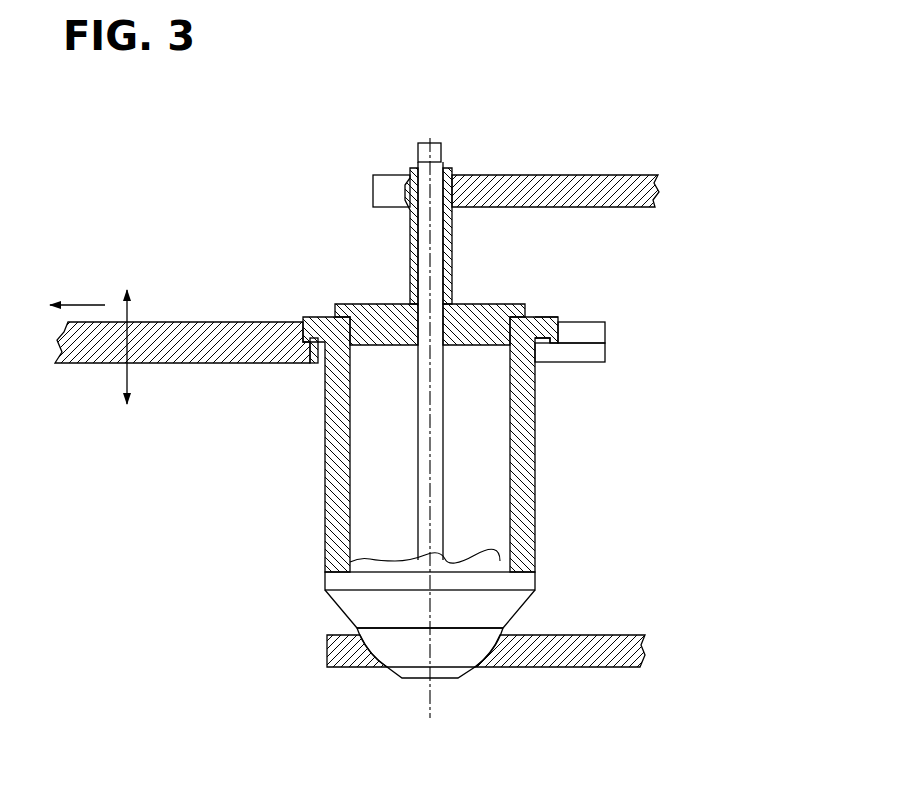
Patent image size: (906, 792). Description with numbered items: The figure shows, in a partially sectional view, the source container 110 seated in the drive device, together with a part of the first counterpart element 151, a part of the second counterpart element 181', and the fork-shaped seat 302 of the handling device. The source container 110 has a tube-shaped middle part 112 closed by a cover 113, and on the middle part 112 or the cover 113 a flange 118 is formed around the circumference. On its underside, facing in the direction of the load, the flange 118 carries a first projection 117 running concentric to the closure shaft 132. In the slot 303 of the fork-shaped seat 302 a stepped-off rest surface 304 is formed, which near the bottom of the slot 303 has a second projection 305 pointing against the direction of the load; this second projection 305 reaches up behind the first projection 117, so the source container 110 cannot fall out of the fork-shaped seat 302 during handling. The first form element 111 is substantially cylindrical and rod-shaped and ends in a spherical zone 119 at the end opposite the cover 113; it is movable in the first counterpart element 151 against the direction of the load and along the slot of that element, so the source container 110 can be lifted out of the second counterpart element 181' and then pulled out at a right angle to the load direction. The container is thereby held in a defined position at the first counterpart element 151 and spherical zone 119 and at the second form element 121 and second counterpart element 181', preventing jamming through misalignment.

The source container 110 is at (560, 534).
The first form element 111 is at (409, 257).
The tube-shaped middle part 112 is at (520, 415).
The cover 113 is at (368, 303).
The first projection 117 is at (558, 337).
The flange 118 is at (553, 317).
The spherical zone 119 is at (405, 185).
The second form element 121 is at (458, 645).
The closure shaft 132 is at (430, 442).
The first counterpart element 151 is at (622, 187).
The second counterpart element 181' is at (563, 643).
The fork-shaped seat 302 is at (187, 342).
The slot 303 is at (624, 340).
The stepped-off rest surface 304 is at (582, 343).
The second projection 305 is at (307, 343).